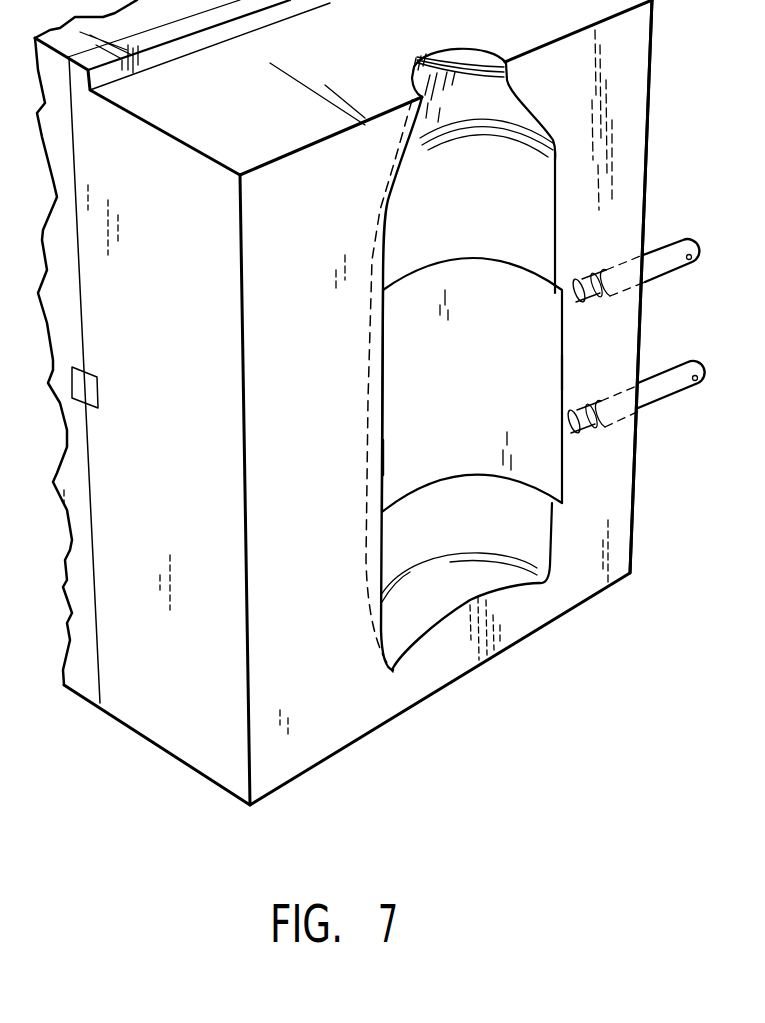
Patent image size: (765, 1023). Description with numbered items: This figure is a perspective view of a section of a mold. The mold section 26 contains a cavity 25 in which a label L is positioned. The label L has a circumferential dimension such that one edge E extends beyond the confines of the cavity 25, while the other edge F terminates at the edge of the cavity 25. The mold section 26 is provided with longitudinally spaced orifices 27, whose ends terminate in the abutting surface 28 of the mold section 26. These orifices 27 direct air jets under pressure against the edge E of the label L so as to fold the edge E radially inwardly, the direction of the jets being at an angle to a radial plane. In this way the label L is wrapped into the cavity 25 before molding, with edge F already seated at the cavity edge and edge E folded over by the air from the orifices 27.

The cavity 25 is at (473, 211).
The mold section 26 is at (636, 128).
The orifices 27 is at (565, 311).
The abutting surface 28 is at (637, 203).
The label L is at (487, 355).
The edge F is at (385, 458).
The edge E is at (562, 377).